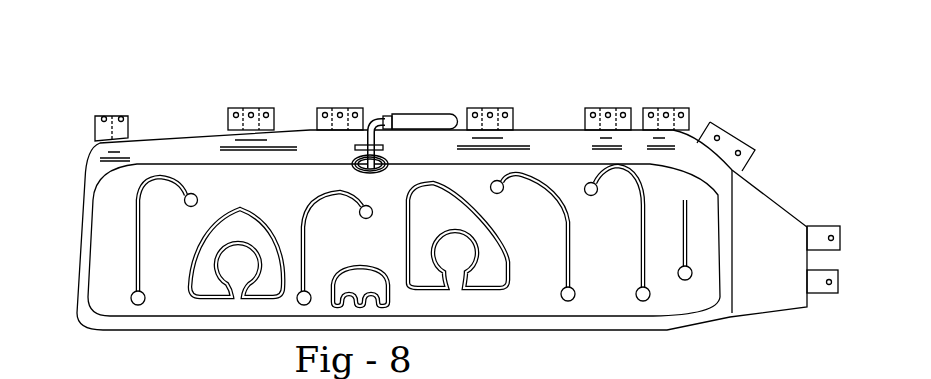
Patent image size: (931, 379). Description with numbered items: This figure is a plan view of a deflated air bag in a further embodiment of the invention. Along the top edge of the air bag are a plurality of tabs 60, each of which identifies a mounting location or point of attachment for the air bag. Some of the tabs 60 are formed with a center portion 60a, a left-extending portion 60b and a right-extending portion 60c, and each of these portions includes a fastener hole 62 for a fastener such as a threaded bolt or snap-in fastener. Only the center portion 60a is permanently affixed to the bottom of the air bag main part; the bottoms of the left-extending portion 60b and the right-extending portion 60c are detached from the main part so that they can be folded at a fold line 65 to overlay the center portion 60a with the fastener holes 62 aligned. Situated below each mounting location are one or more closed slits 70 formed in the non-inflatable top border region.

The tab 60 is at (112, 108).
The center portion 60a is at (122, 113).
The left-extending portion 60b is at (106, 114).
The right-extending portion 60c is at (267, 112).
The fastener hole 62 is at (103, 118).
The fold line 65 is at (116, 114).
The closed slit 70 is at (222, 148).